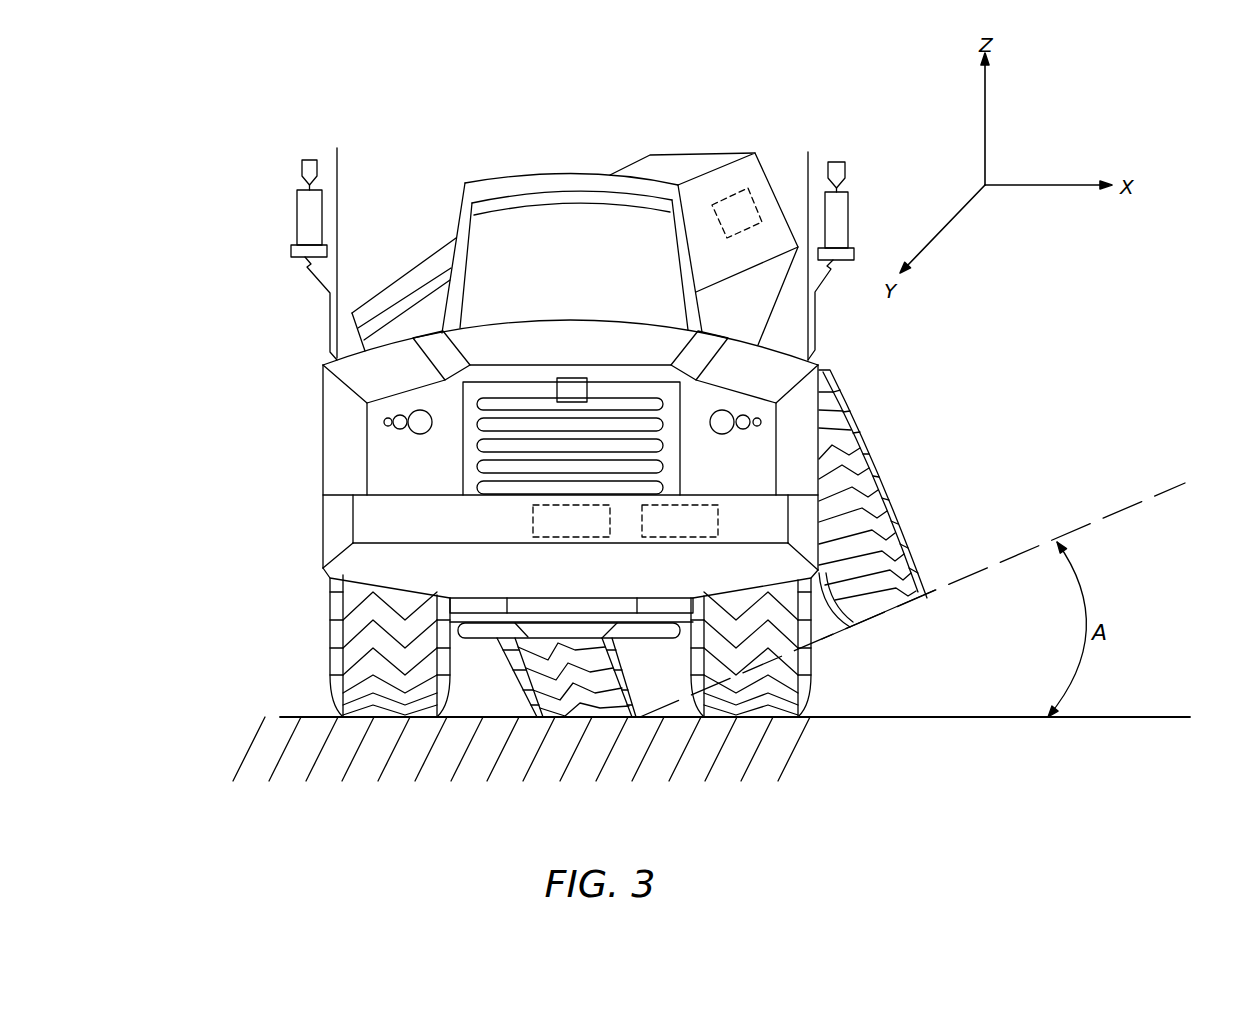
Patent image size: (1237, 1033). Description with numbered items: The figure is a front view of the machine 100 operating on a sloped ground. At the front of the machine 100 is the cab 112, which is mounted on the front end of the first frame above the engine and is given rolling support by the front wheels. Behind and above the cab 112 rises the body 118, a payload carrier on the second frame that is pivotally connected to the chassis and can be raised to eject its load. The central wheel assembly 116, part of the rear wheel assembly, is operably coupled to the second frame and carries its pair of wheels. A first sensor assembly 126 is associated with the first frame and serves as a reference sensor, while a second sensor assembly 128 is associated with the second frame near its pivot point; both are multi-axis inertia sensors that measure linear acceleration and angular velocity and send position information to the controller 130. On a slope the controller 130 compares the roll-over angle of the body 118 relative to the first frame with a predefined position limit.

The machine 100 is at (238, 135).
The cab 112 is at (497, 178).
The central wheel assembly 116 is at (330, 630).
The body 118 is at (698, 153).
The first sensor assembly 126 is at (680, 521).
The second sensor assembly 128 is at (737, 213).
The controller 130 is at (571, 521).